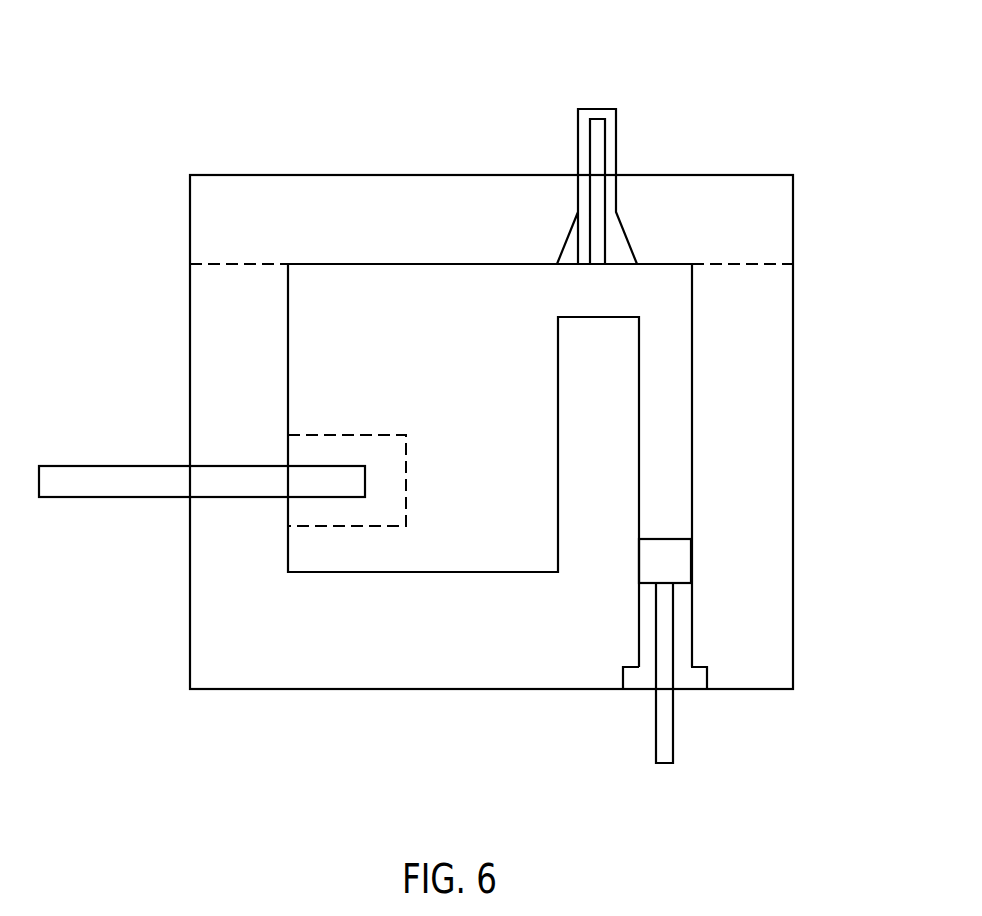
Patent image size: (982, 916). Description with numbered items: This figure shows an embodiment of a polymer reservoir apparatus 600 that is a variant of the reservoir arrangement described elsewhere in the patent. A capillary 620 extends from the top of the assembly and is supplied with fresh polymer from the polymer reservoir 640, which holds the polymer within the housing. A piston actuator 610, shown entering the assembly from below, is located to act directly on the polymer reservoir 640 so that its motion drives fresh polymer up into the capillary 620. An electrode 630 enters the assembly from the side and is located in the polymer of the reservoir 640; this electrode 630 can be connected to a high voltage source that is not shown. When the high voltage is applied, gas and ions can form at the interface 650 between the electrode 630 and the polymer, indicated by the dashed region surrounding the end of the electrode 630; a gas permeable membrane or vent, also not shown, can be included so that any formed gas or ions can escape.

The valve assembly 600 is at (206, 86).
The piston actuator 610 is at (673, 730).
The capillary 620 is at (598, 132).
The electrode 630 is at (82, 465).
The polymer reservoir 640 is at (672, 302).
The interface 650 is at (308, 532).